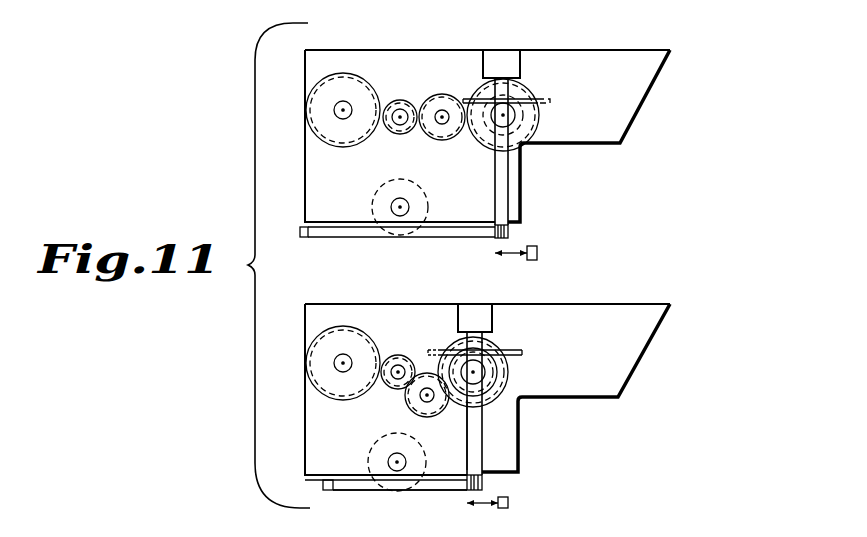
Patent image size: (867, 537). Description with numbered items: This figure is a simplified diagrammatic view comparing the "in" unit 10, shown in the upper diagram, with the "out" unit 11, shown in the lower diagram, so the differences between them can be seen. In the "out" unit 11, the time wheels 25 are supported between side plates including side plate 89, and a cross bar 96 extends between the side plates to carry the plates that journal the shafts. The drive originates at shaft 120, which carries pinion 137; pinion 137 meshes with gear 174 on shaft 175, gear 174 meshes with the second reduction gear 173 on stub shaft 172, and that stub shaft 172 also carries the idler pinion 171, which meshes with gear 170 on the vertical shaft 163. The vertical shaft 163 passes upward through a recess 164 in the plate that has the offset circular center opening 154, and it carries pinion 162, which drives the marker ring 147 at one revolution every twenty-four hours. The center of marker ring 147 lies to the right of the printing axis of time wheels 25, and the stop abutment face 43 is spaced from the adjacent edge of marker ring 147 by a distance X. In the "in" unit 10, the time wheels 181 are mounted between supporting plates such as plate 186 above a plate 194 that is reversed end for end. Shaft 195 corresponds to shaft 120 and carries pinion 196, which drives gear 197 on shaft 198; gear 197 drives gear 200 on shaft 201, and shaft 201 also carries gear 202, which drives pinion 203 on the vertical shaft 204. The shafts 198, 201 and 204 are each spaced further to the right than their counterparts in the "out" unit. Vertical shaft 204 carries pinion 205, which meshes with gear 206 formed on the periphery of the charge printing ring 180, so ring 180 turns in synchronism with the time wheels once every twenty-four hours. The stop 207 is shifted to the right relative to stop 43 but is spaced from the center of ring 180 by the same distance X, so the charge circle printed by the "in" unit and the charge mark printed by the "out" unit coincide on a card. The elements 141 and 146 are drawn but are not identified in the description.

The "in" unit 10 is at (289, 145).
The "out" unit 11 is at (294, 405).
The supporting plate 186 is at (613, 60).
The pinion 196 is at (406, 100).
The shaft 195 is at (400, 108).
The gear 197 is at (447, 95).
The shaft 198 is at (442, 124).
The gear 200 is at (522, 83).
The shaft 201 is at (538, 128).
The gear 202 is at (520, 108).
The pinion 203 is at (540, 97).
The vertical shaft 204 is at (503, 192).
The pinion 205 is at (510, 231).
The stop 207 is at (538, 255).
The plate 194 is at (468, 207).
The time wheels 181 is at (373, 199).
The gear 206 is at (300, 233).
The charge printing ring 180 is at (338, 237).
The side plate 89 is at (614, 315).
The cross bar 96 is at (480, 315).
The drive wheel 141 is at (348, 322).
The pinion 137 is at (404, 354).
The shaft 120 is at (397, 378).
The shaft 175 is at (425, 400).
The gear 170 is at (523, 352).
The idler pinion 171 is at (495, 370).
The stub shaft 172 is at (490, 385).
The gear 174 is at (428, 352).
The second reduction gear 173 is at (493, 342).
The vertical shaft 163 is at (473, 422).
The recess 164 is at (450, 475).
The pinion 162 is at (483, 482).
The stop abutment face 43 is at (508, 503).
The time wheels 25 is at (372, 447).
The circular center opening 154 is at (317, 473).
The base plate 146 is at (387, 490).
The marker ring 147 is at (420, 492).